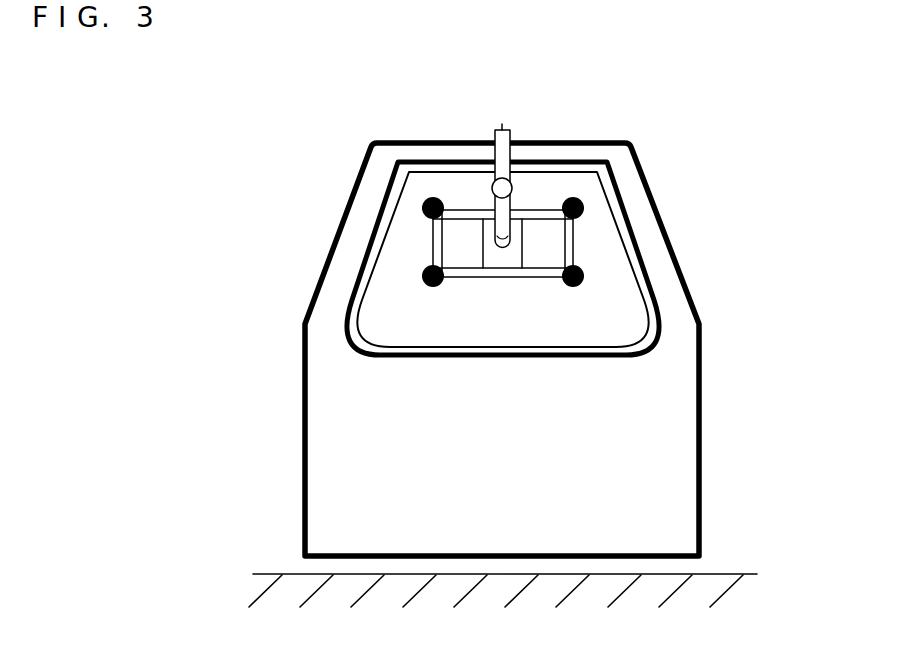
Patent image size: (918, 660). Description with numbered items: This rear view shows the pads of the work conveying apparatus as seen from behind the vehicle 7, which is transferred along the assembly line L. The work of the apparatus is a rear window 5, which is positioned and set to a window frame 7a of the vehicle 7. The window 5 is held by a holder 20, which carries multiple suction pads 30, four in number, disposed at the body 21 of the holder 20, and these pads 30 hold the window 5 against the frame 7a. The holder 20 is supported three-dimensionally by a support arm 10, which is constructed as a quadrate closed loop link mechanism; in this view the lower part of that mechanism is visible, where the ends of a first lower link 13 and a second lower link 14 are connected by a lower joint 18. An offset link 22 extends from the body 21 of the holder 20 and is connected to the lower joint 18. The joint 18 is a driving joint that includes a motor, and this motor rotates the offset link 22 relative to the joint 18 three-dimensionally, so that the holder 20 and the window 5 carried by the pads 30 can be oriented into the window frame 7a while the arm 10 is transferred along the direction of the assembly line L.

The rear window 5 is at (372, 272).
The vehicle 7 is at (348, 208).
The window frame 7a is at (620, 205).
The support arm 10 is at (504, 224).
The first lower link 13 is at (497, 152).
The second lower link 14 is at (493, 137).
The lower joint 18 is at (513, 189).
The holder 20 is at (465, 282).
The body 21 is at (543, 279).
The offset link 22 is at (503, 250).
The suction pads 30 is at (422, 211).
The assembly line L is at (742, 574).